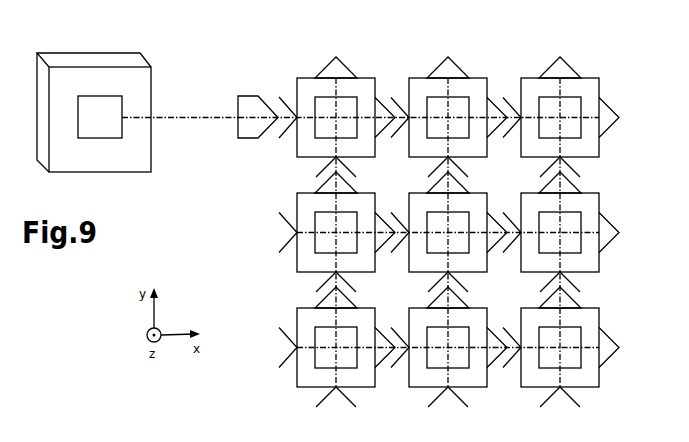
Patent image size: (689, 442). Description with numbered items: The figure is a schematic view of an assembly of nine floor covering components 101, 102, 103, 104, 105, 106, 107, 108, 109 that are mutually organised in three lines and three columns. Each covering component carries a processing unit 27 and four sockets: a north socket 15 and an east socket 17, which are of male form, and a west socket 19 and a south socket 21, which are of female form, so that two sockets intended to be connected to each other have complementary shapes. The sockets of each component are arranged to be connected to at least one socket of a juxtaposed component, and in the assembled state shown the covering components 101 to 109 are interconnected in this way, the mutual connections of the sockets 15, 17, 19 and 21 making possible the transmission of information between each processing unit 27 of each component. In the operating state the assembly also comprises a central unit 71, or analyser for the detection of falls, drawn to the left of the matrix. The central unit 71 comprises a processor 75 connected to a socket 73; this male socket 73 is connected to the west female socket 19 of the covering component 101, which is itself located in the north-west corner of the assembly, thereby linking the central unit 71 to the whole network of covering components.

The central unit 71 is at (152, 68).
The processor 75 is at (89, 127).
The socket 73 is at (238, 128).
The west socket 19 is at (267, 140).
The north socket 15 is at (448, 57).
The east socket 17 is at (619, 118).
The south socket 21 is at (580, 167).
The processing unit 27 is at (325, 128).
The covering component 101 is at (308, 72).
The covering component 102 is at (460, 68).
The covering component 103 is at (573, 67).
The covering component 104 is at (295, 262).
The covering component 105 is at (486, 275).
The covering component 106 is at (603, 263).
The covering component 107 is at (297, 380).
The covering component 108 is at (403, 377).
The covering component 109 is at (603, 377).